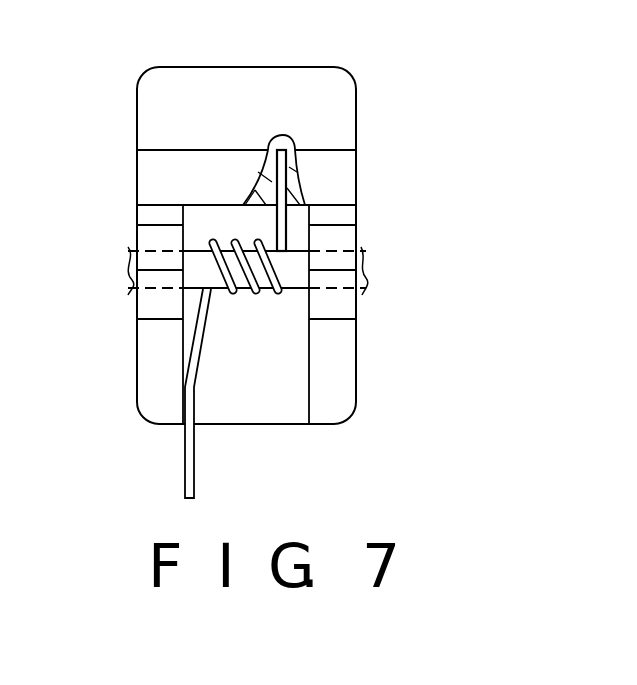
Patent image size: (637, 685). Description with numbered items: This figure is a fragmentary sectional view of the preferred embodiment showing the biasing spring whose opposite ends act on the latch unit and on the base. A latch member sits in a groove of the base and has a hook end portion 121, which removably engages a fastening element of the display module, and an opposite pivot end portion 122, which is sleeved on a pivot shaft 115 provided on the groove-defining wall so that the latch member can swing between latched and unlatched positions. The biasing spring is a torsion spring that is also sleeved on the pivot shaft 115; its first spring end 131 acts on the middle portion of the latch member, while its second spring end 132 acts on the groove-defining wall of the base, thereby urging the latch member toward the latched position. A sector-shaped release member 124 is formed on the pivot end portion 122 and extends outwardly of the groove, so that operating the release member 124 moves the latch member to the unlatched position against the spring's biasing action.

The pivot shaft 115 is at (135, 280).
The hook end portion 121 is at (282, 93).
The pivot end portion 122 is at (337, 300).
The release member 124 is at (340, 385).
The first spring end 131 is at (283, 175).
The second spring end 132 is at (185, 473).